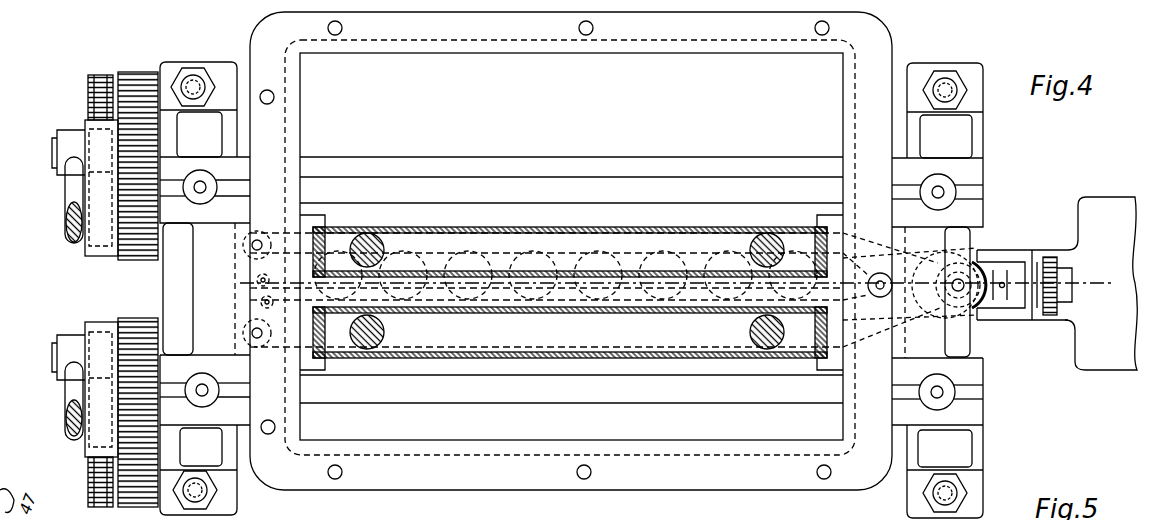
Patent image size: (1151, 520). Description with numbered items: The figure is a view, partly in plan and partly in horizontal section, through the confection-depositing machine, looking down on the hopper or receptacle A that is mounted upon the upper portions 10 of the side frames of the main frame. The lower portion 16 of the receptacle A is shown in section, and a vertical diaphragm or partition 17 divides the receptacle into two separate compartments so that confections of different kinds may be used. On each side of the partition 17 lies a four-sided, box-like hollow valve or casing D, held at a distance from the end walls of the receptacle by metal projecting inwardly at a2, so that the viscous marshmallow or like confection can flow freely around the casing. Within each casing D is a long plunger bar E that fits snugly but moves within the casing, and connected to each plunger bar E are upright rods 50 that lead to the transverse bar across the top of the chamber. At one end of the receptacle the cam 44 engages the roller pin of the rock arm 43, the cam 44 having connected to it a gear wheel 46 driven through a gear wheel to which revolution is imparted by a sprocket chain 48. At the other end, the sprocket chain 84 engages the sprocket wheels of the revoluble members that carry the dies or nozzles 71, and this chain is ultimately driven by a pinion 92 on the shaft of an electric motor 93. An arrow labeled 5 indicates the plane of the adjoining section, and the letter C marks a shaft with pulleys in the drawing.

The upper portions of the side frames 10 is at (977, 440).
The lower portion of the receptacle 16 is at (303, 136).
The vertical diaphragm or partition 17 is at (600, 262).
The die or nozzle 71 is at (632, 235).
The rock arm 43 is at (66, 197).
The cam 44 is at (94, 228).
The gear wheel 46 is at (120, 519).
The sprocket chain 48 is at (88, 104).
The upright rods 50 is at (367, 240).
The sprocket chain 84 is at (978, 270).
The pinion 92 is at (1050, 257).
The electric motor 93 is at (1100, 200).
The section line 5— 5 is at (632, 276).
The hollow valve or casing D is at (570, 290).
The plunger bar E is at (652, 343).
The shaft with pulleys C is at (245, 290).
The hopper or receptacle A is at (771, 504).
The projecting metal a2 is at (312, 372).